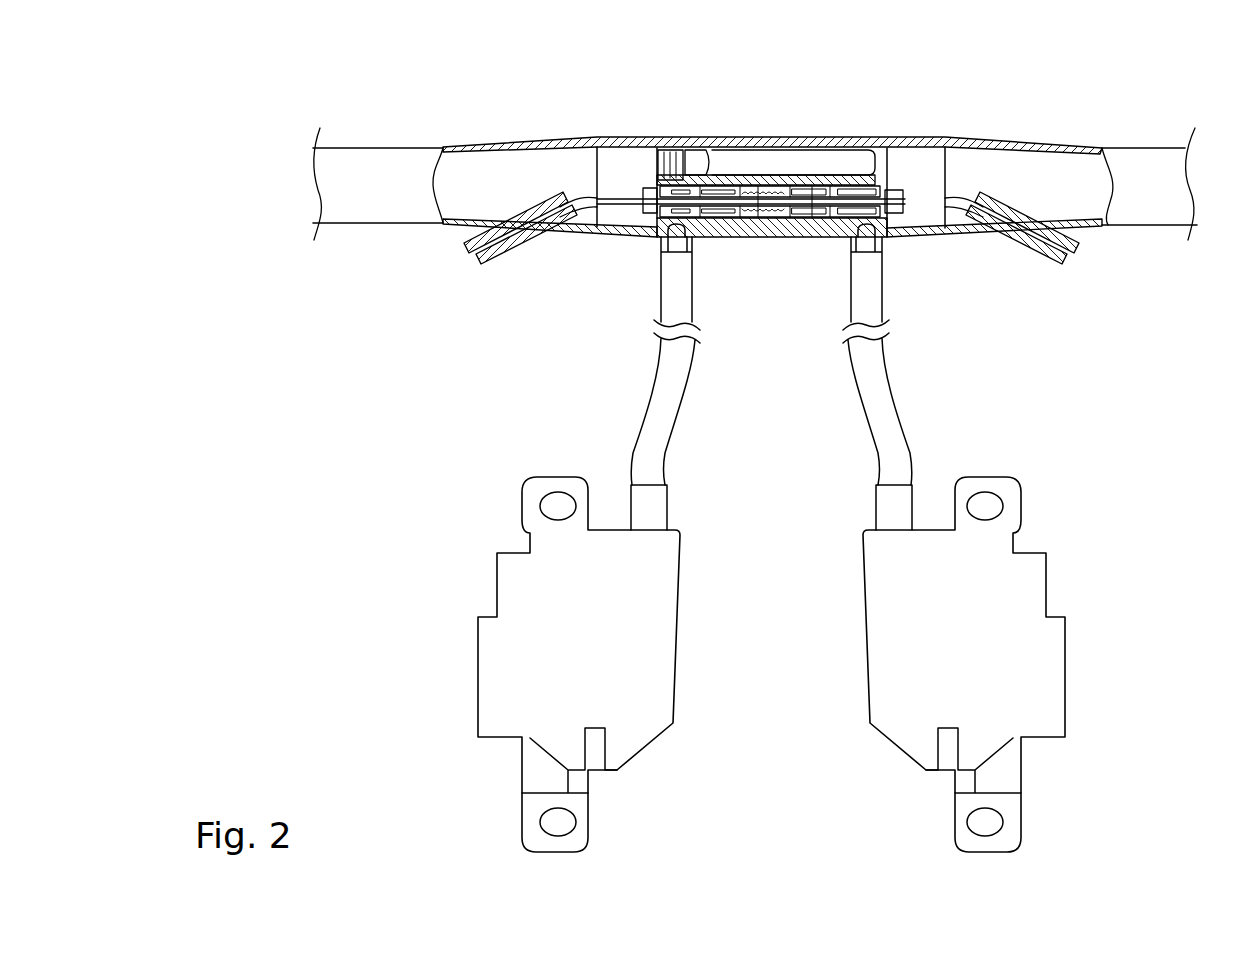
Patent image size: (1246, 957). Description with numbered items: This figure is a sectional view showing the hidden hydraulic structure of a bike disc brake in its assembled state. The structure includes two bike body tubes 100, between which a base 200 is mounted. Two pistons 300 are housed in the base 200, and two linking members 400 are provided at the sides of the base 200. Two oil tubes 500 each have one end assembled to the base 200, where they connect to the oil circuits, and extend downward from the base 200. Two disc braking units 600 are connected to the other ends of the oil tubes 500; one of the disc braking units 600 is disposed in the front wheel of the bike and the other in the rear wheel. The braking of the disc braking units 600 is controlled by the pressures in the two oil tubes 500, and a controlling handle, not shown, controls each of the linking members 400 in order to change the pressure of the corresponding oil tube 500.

The bike body tube 100 is at (383, 158).
The base 200 is at (772, 137).
The piston 300 is at (703, 192).
The linking member 400 is at (585, 137).
The oil tube 500 is at (668, 380).
The disc braking unit 600 is at (494, 652).